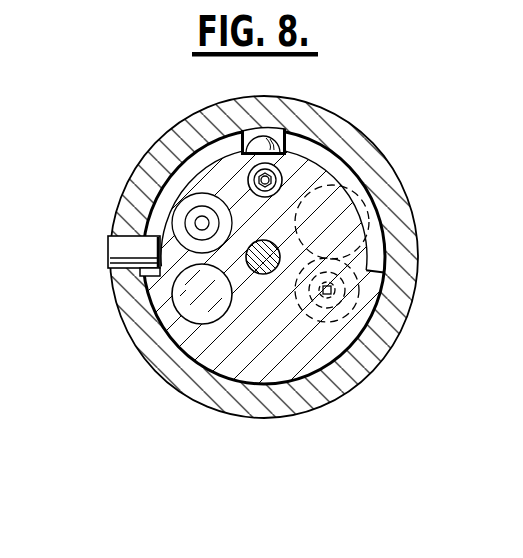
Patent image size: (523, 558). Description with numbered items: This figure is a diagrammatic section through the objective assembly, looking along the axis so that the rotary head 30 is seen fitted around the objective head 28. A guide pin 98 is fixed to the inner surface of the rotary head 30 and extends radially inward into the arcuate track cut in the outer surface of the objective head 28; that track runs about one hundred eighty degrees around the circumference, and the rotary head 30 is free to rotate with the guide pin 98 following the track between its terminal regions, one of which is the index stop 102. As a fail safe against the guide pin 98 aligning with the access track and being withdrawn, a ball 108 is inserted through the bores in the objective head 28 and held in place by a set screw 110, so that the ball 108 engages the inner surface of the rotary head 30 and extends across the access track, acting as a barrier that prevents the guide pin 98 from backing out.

The objective head 28 is at (202, 370).
The rotary head 30 is at (396, 163).
The guide pin 98 is at (111, 240).
The index stop 102 is at (143, 273).
The ball 108 is at (288, 126).
The set screw 110 is at (268, 176).